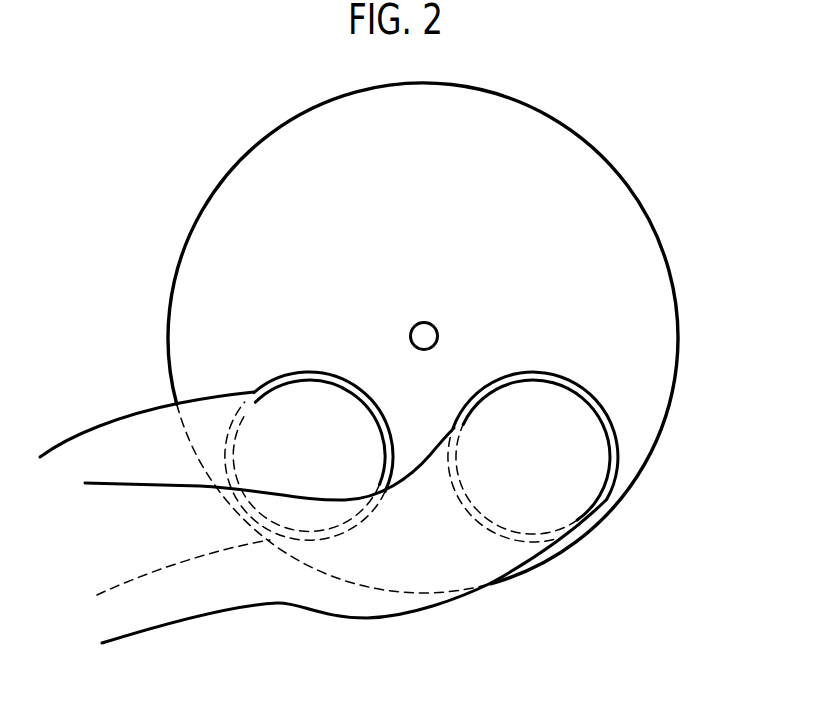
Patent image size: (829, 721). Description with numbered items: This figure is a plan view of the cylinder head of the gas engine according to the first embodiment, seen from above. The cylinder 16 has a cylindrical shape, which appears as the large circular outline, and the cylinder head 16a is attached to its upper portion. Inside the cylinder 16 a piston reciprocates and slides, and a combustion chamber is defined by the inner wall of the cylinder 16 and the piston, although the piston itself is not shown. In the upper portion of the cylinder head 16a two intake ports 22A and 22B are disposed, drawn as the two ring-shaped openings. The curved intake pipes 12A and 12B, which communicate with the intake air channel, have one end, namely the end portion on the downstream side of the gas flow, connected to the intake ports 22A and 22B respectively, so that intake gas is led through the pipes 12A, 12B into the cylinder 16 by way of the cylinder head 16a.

The cylinder 16 is at (678, 333).
The cylinder head 16a is at (635, 226).
The intake port 22A is at (528, 371).
The intake port 22B is at (305, 371).
The intake pipe 12A is at (398, 619).
The intake pipe 12B is at (77, 427).